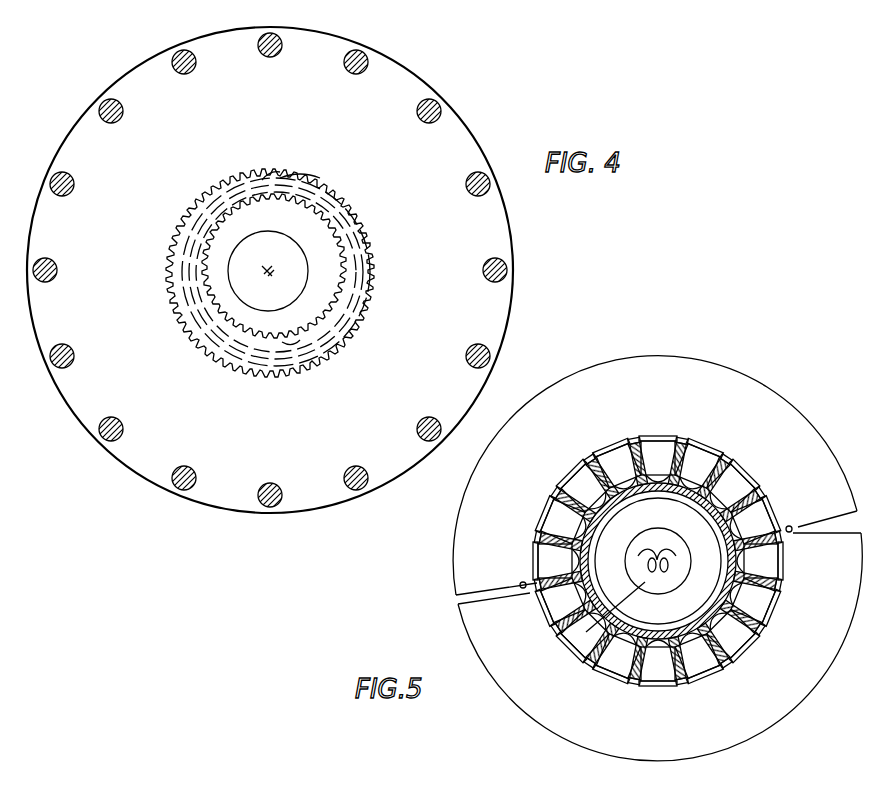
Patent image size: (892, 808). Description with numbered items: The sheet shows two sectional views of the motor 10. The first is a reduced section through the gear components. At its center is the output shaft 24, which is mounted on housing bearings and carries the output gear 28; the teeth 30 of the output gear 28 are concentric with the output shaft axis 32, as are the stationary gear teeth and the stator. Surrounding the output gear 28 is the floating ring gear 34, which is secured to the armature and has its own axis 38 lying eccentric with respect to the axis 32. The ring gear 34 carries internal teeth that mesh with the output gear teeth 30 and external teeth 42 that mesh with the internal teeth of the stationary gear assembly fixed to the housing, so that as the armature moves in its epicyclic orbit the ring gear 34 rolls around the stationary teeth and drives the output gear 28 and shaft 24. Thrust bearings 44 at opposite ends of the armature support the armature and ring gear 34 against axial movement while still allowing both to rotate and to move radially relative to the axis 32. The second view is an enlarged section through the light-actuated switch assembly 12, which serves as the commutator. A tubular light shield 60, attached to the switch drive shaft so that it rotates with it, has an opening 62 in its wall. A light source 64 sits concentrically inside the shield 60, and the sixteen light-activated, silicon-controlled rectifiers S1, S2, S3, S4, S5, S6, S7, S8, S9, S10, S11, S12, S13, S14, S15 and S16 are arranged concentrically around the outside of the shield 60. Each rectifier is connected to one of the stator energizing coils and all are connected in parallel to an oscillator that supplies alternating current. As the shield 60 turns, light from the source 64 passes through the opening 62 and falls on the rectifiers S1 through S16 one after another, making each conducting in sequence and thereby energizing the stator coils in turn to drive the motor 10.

In FIG. 4, the motor 10 is at (514, 233).
In FIG. 5, the switch assembly 12 is at (728, 370).
In FIG. 4, the output shaft 24 is at (300, 276).
In FIG. 4, the output gear 28 is at (248, 218).
In FIG. 4, the output gear teeth 30 is at (292, 342).
In FIG. 4, the output shaft axis 32 is at (270, 273).
In FIG. 4, the floating ring gear 34 is at (284, 172).
In FIG. 4, the ring gear axis 38 is at (266, 269).
In FIG. 4, the external teeth 42 is at (268, 172).
In FIG. 4, the thrust bearings 44 is at (300, 188).
In FIG. 5, the tubular light shield 60 is at (652, 448).
In FIG. 5, the opening 62 is at (742, 566).
In FIG. 5, the light source 64 is at (578, 647).
In FIG. 5, the light-activated silicon-controlled rectifier S1 is at (706, 662).
In FIG. 5, the light-activated silicon-controlled rectifier S2 is at (742, 652).
In FIG. 5, the light-activated silicon-controlled rectifier S3 is at (758, 608).
In FIG. 5, the light-activated silicon-controlled rectifier S4 is at (776, 551).
In FIG. 5, the light-activated silicon-controlled rectifier S5 is at (766, 520).
In FIG. 5, the light-activated silicon-controlled rectifier S6 is at (734, 480).
In FIG. 5, the light-activated silicon-controlled rectifier S7 is at (706, 456).
In FIG. 5, the light-activated silicon-controlled rectifier S8 is at (678, 436).
In FIG. 5, the light-activated silicon-controlled rectifier S9 is at (612, 460).
In FIG. 5, the light-activated silicon-controlled rectifier S10 is at (566, 480).
In FIG. 5, the light-activated silicon-controlled rectifier S11 is at (548, 522).
In FIG. 5, the light-activated silicon-controlled rectifier S12 is at (542, 563).
In FIG. 5, the light-activated silicon-controlled rectifier S13 is at (560, 600).
In FIG. 5, the light-activated silicon-controlled rectifier S14 is at (598, 656).
In FIG. 5, the light-activated silicon-controlled rectifier S15 is at (626, 676).
In FIG. 5, the light-activated silicon-controlled rectifier S16 is at (660, 682).